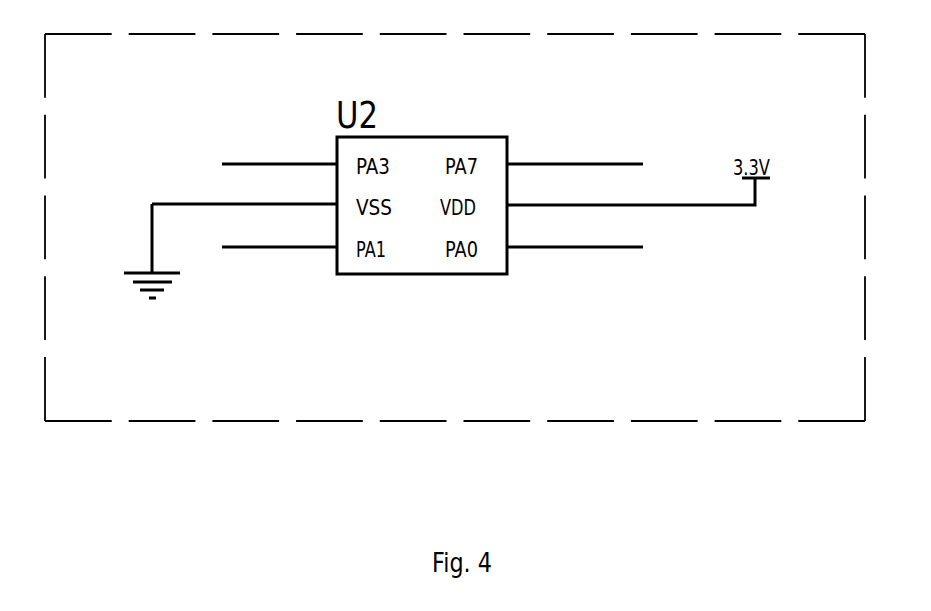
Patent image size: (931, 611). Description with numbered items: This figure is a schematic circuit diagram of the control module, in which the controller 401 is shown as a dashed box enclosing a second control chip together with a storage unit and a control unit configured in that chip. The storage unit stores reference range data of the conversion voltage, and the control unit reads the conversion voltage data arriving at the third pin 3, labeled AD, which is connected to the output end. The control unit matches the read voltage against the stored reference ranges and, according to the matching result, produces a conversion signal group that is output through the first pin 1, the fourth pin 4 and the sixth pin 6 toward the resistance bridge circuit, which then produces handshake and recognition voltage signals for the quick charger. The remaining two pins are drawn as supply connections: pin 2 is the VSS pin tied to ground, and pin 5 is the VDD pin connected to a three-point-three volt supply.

The controller 401 is at (460, 421).
The first pin 1 is at (279, 152).
The pin 2 (VSS, ground) 2 is at (230, 239).
The third pin 3 is at (279, 233).
The fourth pin 4 is at (575, 236).
The pin 5 (VDD, 3.3V) 5 is at (638, 192).
The sixth pin 6 is at (575, 153).